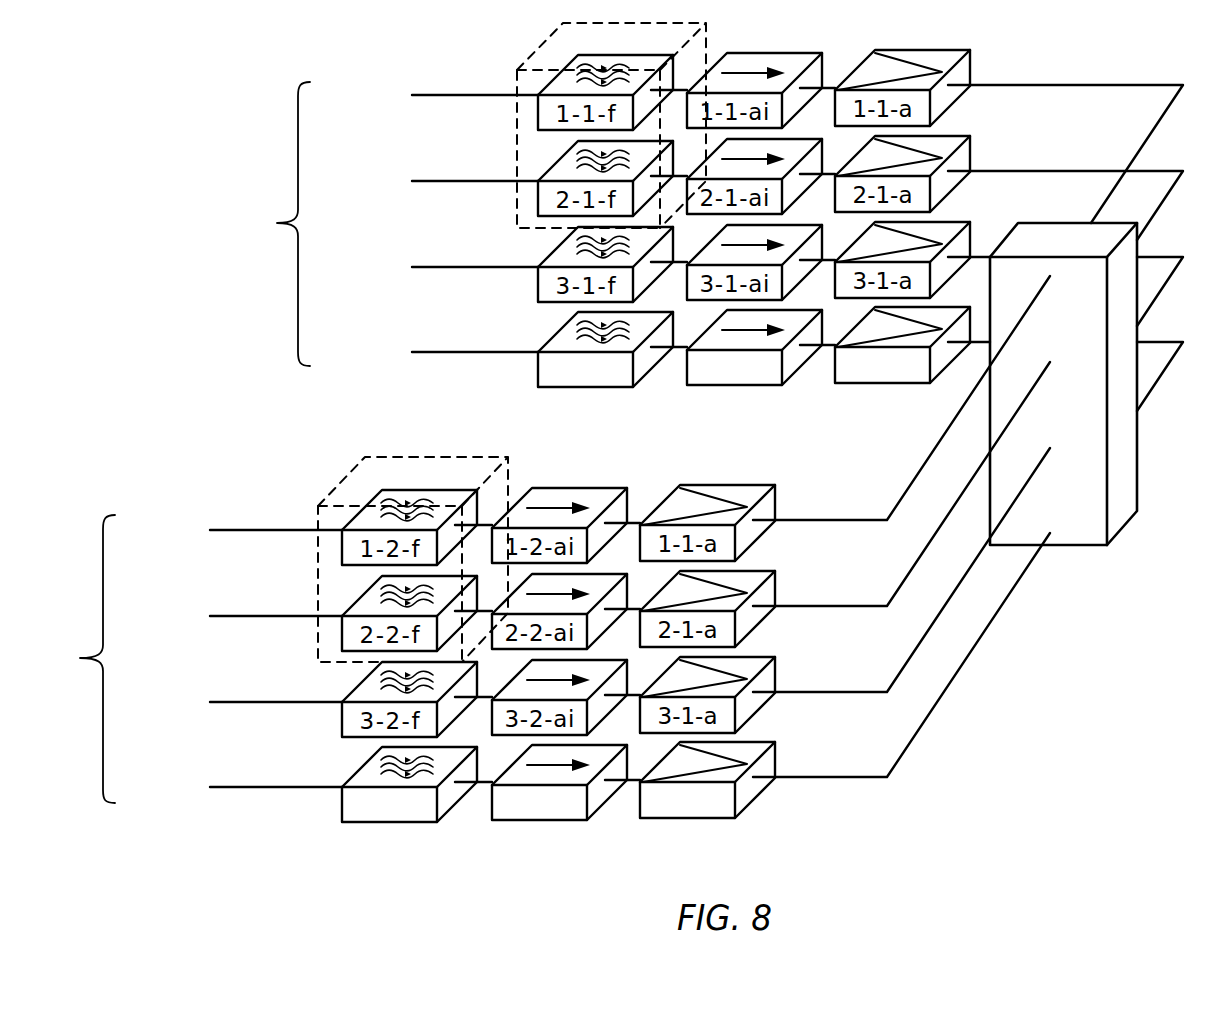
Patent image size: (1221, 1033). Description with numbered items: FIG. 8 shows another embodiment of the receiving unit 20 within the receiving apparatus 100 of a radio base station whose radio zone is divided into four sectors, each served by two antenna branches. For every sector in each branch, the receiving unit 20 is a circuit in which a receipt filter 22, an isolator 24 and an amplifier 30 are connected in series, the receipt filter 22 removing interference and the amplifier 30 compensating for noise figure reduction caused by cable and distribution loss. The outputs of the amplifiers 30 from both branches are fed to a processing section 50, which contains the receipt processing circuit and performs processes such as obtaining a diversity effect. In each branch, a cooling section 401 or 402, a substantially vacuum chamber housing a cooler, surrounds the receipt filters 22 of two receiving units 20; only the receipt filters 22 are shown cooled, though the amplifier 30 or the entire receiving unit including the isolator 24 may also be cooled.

The receiving apparatus 100 is at (182, 162).
The receiving unit 20 is at (601, 477).
The receipt filter 22 is at (610, 388).
The isolator 24 is at (733, 386).
The amplifier 30 is at (627, 430).
The processing section 50 is at (1061, 320).
The cooling section 401 is at (540, 47).
The cooling section 402 is at (342, 483).